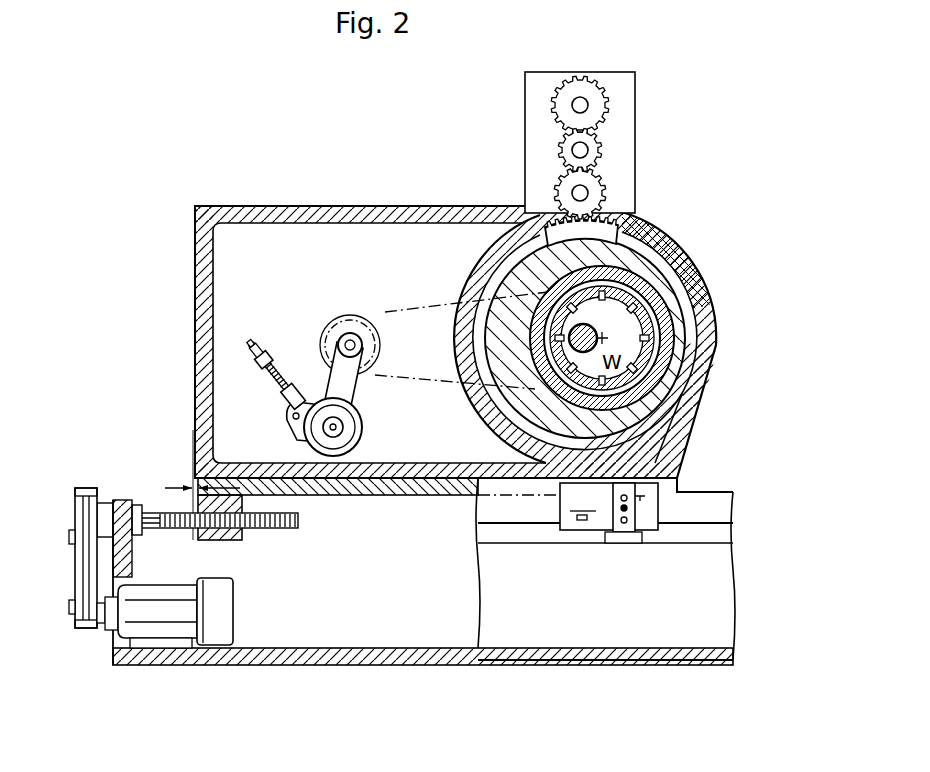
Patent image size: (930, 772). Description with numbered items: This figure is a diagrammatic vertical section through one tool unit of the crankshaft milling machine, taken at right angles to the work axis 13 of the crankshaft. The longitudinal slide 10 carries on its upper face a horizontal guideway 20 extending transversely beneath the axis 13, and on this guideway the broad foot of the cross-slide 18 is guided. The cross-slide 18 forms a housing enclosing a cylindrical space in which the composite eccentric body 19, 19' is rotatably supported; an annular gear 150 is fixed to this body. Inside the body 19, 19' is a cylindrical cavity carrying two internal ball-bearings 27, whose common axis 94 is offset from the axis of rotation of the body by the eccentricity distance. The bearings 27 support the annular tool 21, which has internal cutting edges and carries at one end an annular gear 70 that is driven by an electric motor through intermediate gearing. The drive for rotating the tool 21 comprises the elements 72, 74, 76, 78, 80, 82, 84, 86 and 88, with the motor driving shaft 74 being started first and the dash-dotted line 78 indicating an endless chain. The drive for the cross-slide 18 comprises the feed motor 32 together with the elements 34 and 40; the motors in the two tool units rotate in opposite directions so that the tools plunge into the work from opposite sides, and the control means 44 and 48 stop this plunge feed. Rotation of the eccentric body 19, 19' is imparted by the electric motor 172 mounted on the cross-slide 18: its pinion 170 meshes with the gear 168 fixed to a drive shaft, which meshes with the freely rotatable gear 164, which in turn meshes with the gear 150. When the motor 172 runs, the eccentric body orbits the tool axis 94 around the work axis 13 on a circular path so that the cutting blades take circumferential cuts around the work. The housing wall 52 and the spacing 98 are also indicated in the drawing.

The longitudinal slide 10 is at (347, 657).
The axis of the crankshaft 13 is at (503, 268).
The cross-slide 18 is at (195, 331).
The eccentric body 19 is at (566, 338).
The eccentric body section 19' is at (667, 255).
The horizontal guideway 20 is at (707, 493).
The annular tool 21 is at (636, 381).
The internal ball-bearings 27 is at (658, 309).
The feed motor 32 is at (222, 592).
The cross-slide drive element 34 is at (296, 530).
The cross-slide drive element 40 is at (86, 580).
The control means 44 is at (609, 506).
The control means 48 is at (624, 535).
The housing wall 52 is at (465, 336).
The annular gear 70 is at (662, 343).
The tool drive element 72 is at (350, 382).
The motor driving shaft 74 is at (344, 427).
The tool drive element 76 is at (377, 338).
The endless chain 78 is at (417, 306).
The tool drive element 80 is at (341, 326).
The tool drive element 82 is at (323, 387).
The tool drive element 84 is at (348, 446).
The tool drive element 86 is at (281, 383).
The tool drive element 88 is at (253, 354).
The tool axis 94 is at (609, 328).
The spacing 98 is at (191, 482).
The annular gear 150 is at (547, 217).
The gear 164 is at (607, 190).
The gear 168 is at (604, 150).
The pinion 170 is at (586, 78).
The electric motor 172 is at (618, 99).